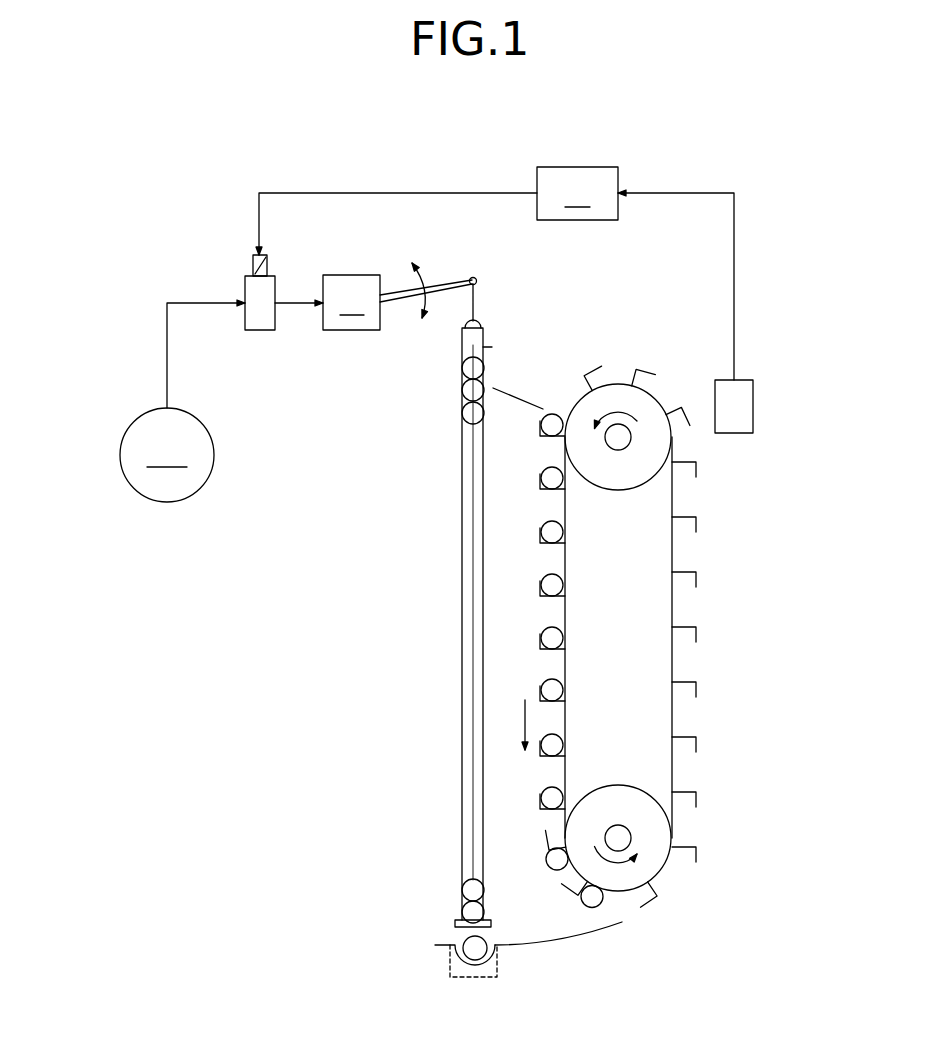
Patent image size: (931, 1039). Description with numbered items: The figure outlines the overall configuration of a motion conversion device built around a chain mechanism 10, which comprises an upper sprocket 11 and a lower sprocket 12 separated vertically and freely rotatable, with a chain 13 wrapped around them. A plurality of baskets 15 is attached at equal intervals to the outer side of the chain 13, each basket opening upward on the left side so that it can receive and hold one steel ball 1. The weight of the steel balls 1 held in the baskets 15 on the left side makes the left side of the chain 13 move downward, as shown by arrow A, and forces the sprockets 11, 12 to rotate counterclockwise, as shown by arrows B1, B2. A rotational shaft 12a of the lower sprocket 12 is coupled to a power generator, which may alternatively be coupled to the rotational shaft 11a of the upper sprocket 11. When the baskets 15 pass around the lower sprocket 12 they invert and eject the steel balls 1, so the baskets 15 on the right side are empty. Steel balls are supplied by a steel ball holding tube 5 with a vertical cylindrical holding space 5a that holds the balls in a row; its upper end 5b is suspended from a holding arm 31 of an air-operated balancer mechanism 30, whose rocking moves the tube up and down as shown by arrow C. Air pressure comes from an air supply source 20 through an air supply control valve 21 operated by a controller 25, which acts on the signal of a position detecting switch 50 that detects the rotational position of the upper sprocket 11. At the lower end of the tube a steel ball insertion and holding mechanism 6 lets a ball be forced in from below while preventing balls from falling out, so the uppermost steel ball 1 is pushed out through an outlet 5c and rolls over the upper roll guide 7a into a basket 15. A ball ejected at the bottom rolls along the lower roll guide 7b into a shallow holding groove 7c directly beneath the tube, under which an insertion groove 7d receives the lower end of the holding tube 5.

The steel ball 1 is at (464, 370).
The steel ball holding tube 5 is at (472, 606).
The holding space 5a is at (469, 688).
The upper end of the steel ball holding tube 5b is at (480, 323).
The outlet 5c is at (491, 355).
The steel ball insertion and holding mechanism 6 is at (492, 924).
The upper roll guide 7a is at (496, 388).
The lower roll guide 7b is at (562, 933).
The holding groove 7c is at (450, 960).
The insertion groove 7d is at (497, 965).
The chain mechanism 10 is at (645, 635).
The upper sprocket 11 is at (668, 459).
The rotational shaft of the upper sprocket 11a is at (633, 440).
The lower sprocket 12 is at (670, 814).
The rotational shaft of the lower sprocket 12a is at (631, 833).
The chain 13 is at (565, 607).
The basket 15 is at (698, 573).
The air supply source 20 is at (120, 460).
The air supply control valve 21 is at (262, 330).
The controller 25 is at (577, 193).
The balancer mechanism 30 is at (351, 302).
The holding arm 31 is at (433, 283).
The position detecting switch 50 is at (740, 405).
The arrow A is at (528, 718).
The arrow B1 is at (634, 864).
The arrow B2 is at (632, 412).
The arrow C is at (437, 305).